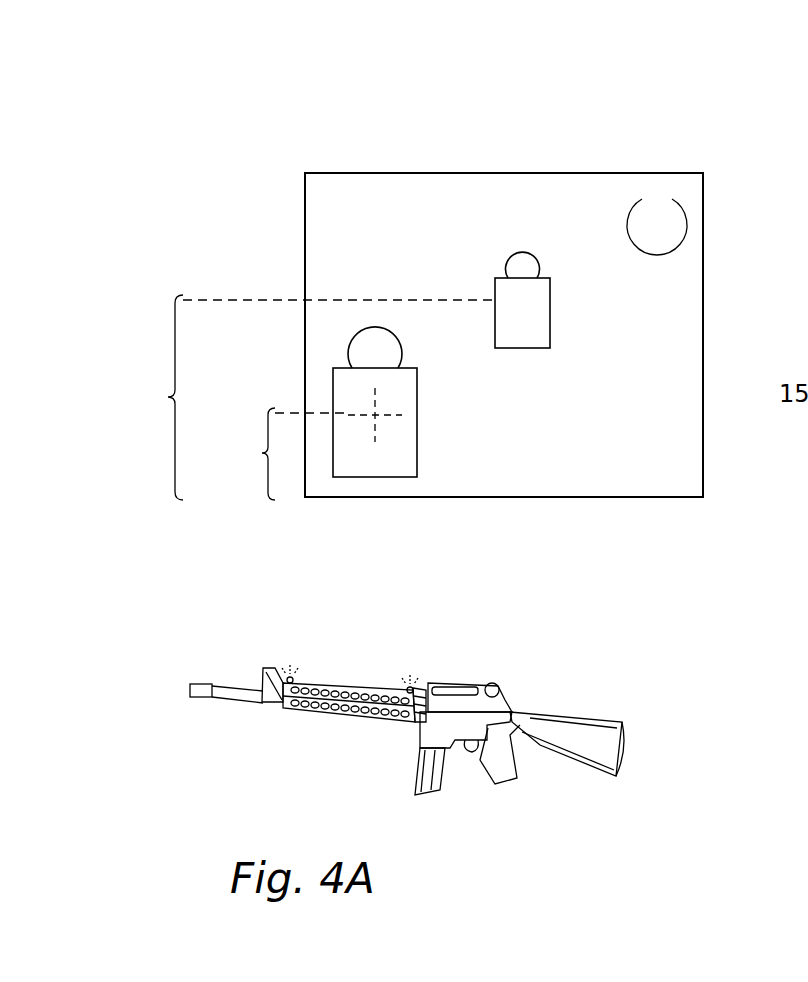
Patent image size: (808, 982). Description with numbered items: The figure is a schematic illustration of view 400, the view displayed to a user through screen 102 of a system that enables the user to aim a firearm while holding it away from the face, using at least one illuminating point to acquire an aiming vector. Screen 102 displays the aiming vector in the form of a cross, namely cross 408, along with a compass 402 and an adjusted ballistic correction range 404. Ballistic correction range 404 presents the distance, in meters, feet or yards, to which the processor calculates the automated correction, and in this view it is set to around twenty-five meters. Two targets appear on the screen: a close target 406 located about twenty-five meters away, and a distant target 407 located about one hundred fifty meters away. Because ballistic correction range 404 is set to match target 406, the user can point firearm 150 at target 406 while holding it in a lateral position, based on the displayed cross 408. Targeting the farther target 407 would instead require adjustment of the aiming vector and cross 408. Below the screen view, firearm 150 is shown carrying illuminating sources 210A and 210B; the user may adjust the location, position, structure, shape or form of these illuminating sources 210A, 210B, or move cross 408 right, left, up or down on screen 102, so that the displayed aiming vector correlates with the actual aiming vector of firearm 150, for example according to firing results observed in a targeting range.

The view 400 is at (172, 89).
The screen 102 is at (385, 173).
The compass 402 is at (688, 228).
The adjusted ballistic correction range 404 is at (690, 275).
The target 406 is at (417, 462).
The target 407 is at (550, 345).
The cross 408 is at (400, 417).
The firearm 150 is at (607, 722).
The illuminating source 210A is at (292, 672).
The illuminating source 210B is at (412, 684).